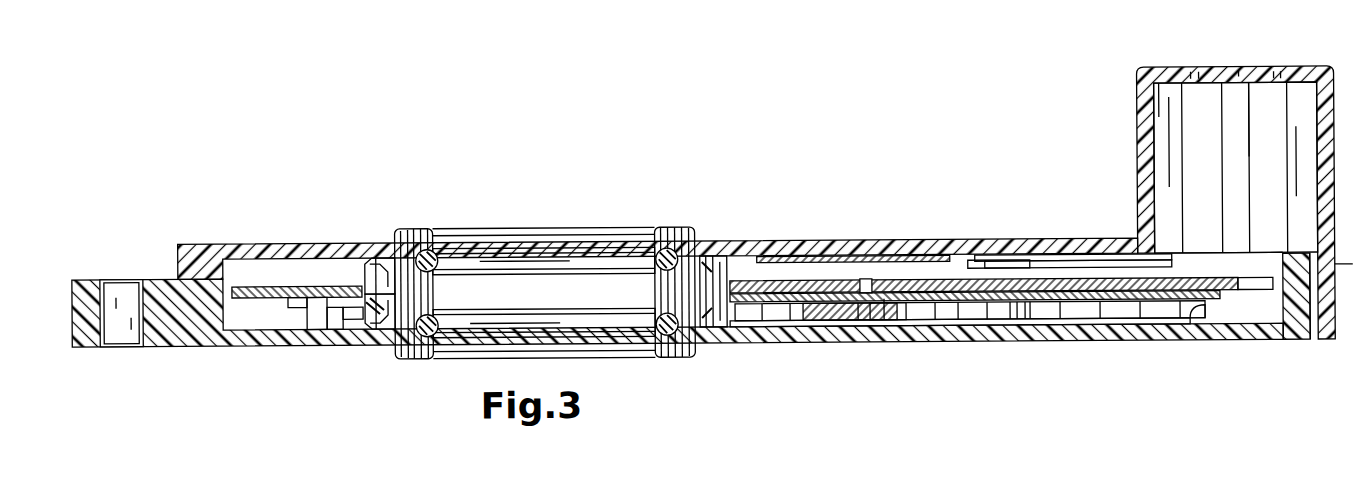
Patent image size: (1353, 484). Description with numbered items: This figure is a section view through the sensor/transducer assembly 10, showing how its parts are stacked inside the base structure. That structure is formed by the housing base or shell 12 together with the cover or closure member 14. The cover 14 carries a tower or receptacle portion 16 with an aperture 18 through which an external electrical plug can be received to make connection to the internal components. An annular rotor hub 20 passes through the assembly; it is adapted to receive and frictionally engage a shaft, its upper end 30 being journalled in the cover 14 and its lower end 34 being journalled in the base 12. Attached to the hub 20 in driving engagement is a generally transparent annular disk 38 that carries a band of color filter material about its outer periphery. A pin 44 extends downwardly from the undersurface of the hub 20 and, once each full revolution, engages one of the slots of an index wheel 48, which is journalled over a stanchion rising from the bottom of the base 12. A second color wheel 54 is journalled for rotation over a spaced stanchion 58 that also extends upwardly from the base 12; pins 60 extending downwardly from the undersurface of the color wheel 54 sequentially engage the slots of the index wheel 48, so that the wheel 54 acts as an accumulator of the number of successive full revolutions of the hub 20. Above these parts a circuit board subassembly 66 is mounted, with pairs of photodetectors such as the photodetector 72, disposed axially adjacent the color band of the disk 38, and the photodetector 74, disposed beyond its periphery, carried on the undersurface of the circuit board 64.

The sensor/transducer assembly 10 is at (316, 170).
The housing base or shell 12 is at (810, 343).
The cover or closure member 14 is at (830, 258).
The tower or receptacle portion 16 is at (1138, 103).
The aperture 18 is at (1280, 72).
The annular rotor hub 20 is at (677, 232).
The upper end of the hub 30 is at (388, 244).
The lower end of rotor hub 34 is at (391, 338).
The annular disk 38 is at (818, 258).
The pin 44 is at (297, 315).
The index wheel 48 is at (790, 312).
The second color wheel 54 is at (1250, 281).
The stanchion 58 is at (955, 266).
The pins 60 is at (1200, 310).
The circuit board 64 is at (950, 302).
The circuit board subassembly 66 is at (878, 302).
The photodetector 72 is at (755, 318).
The photodetector 74 is at (895, 276).